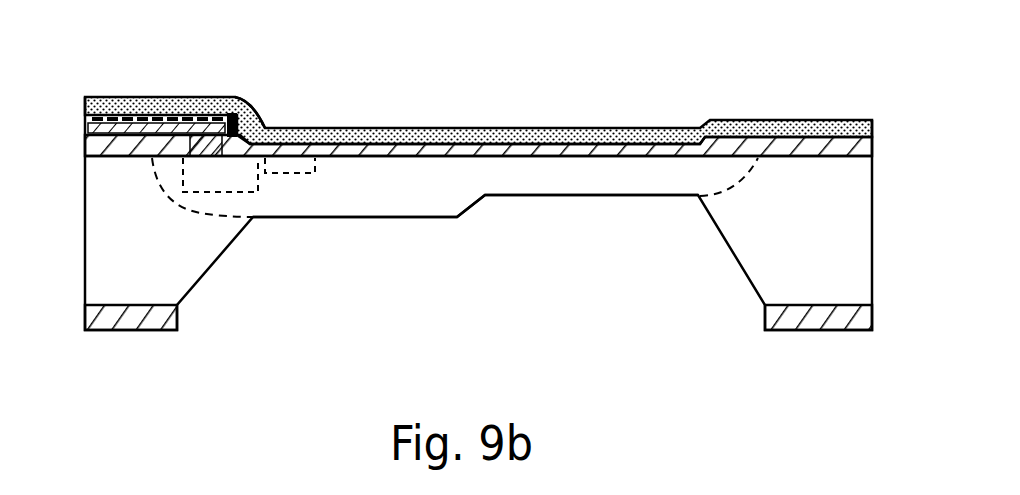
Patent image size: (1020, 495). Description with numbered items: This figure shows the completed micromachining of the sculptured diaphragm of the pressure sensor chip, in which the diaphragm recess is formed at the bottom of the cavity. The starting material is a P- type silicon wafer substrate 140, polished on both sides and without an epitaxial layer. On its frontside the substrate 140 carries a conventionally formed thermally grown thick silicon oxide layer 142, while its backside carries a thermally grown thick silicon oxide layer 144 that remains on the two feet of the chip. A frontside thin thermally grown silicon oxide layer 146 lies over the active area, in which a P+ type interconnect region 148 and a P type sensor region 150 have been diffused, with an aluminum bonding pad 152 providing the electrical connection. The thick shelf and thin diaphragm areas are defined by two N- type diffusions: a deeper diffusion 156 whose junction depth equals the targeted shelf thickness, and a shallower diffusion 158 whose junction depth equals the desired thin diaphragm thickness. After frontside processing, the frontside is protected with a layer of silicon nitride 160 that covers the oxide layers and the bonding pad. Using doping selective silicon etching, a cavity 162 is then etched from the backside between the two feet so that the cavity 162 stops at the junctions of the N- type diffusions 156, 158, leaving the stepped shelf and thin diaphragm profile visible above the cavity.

The substrate 140 is at (175, 277).
The frontside thick silicon oxide layer 142 is at (872, 138).
The backside thick silicon oxide layer 144 is at (793, 320).
The frontside thin silicon oxide layer 146 is at (235, 97).
The P+ type interconnect region 148 is at (190, 182).
The P type sensor region 150 is at (266, 165).
The aluminum bonding pad 152 is at (85, 118).
The deeper N- type diffusion 156 is at (415, 202).
The shallower N- type diffusion 158 is at (610, 180).
The silicon nitride layer 160 is at (522, 128).
The cavity 162 is at (563, 272).